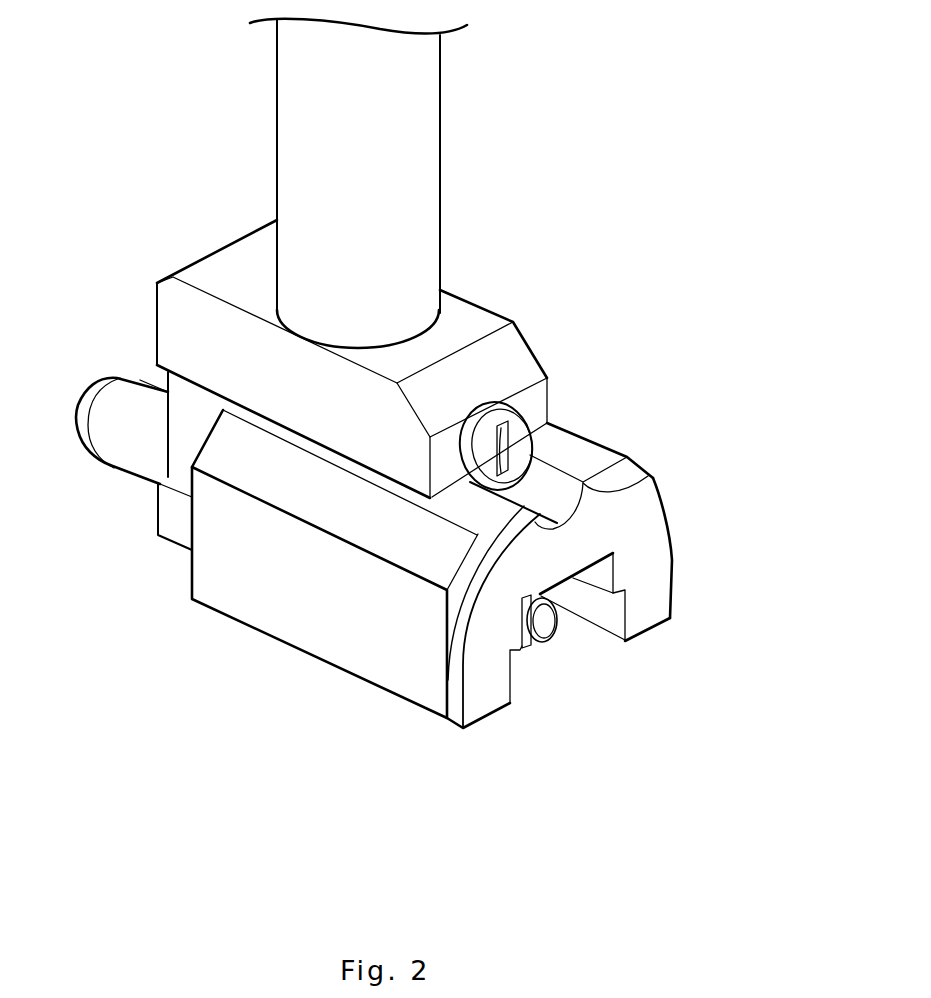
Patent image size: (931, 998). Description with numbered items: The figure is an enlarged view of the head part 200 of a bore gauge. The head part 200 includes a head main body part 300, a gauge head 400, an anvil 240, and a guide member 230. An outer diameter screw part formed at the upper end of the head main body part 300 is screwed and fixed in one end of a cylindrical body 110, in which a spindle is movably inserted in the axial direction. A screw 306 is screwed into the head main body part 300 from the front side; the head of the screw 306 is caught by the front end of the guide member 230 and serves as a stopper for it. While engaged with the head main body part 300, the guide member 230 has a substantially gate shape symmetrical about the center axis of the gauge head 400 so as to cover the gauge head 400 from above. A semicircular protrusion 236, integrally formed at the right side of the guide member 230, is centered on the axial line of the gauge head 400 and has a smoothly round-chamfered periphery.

The cylindrical body 110 is at (422, 128).
The head part 200 is at (602, 212).
The head main body part 300 is at (181, 333).
The screw 306 is at (523, 432).
The anvil 240 is at (137, 447).
The guide member 230 is at (348, 655).
The semicircular protrusion 236 is at (650, 566).
The gauge head 400 is at (545, 623).